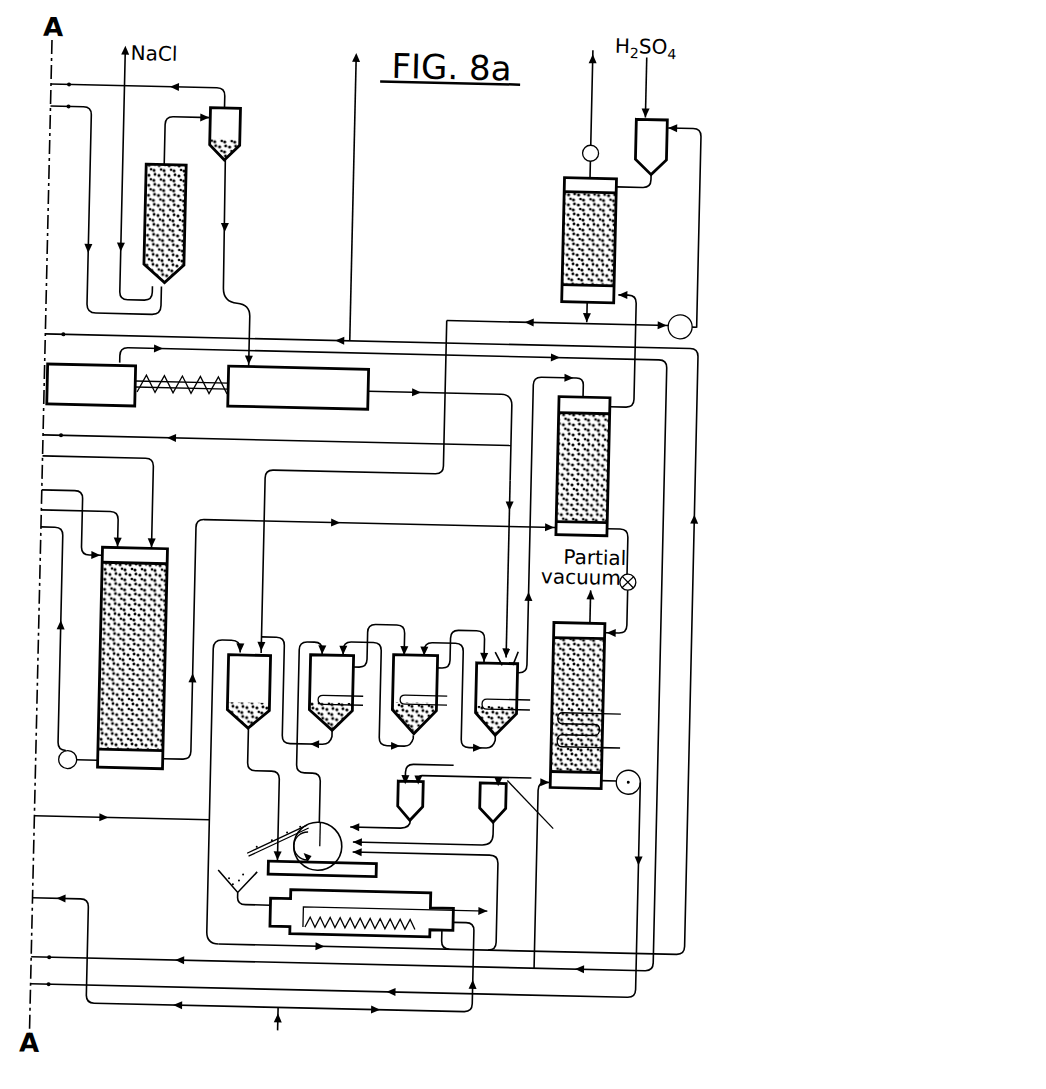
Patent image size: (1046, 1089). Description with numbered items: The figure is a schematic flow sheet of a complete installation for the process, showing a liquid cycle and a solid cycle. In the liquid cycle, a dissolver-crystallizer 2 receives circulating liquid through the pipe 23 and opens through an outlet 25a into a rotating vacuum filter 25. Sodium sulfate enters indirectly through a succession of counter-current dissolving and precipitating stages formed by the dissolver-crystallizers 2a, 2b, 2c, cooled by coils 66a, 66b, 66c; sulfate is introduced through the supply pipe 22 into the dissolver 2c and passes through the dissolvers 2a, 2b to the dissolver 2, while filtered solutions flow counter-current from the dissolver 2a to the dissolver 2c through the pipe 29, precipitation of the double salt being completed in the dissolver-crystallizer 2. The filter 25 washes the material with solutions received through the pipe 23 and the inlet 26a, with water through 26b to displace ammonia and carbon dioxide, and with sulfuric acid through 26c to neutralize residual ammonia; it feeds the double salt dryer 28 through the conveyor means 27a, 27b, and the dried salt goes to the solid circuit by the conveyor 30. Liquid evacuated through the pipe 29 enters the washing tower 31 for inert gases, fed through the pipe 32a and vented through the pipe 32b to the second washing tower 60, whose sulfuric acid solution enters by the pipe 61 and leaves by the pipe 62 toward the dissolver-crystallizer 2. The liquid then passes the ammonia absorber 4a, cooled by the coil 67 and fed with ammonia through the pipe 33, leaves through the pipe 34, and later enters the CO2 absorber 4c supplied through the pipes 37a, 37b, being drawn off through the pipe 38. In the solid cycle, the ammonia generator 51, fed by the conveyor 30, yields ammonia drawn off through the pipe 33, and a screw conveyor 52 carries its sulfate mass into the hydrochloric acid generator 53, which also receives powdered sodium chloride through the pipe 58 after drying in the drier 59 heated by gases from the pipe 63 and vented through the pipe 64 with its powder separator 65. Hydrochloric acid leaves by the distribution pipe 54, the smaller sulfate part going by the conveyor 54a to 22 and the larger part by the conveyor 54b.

The dissolver-crystallizer 2 is at (249, 692).
The dissolver-crystallizer 2a is at (334, 686).
The dissolver-crystallizer 2b is at (413, 690).
The dissolver-crystallizer 2c is at (472, 698).
The ammonia absorber 4a is at (615, 688).
The CO2 absorber 4c is at (112, 631).
The supply pipe 22 is at (514, 645).
The pipe 23 is at (138, 777).
The filter 25 is at (323, 819).
The outlet 25a is at (272, 795).
The inlet 26a is at (474, 846).
The water inlet 26b is at (412, 837).
The sulfuric acid inlet 26c is at (415, 819).
The conveyor means 27a is at (286, 833).
The conveyor means 27b is at (245, 868).
The double salt dryer 28 is at (350, 897).
The pipe 29 is at (540, 594).
The conveyor 30 is at (383, 633).
The washing tower 31 is at (620, 455).
The pipe 32a is at (359, 632).
The pipe 32b is at (618, 348).
The pipe 33 is at (349, 658).
The pipe 34 is at (337, 897).
The pipe 37a is at (109, 509).
The pipe 37b is at (123, 503).
The pipe 38 is at (68, 648).
The ammonia generator 51 is at (91, 385).
The screw conveyor 52 is at (203, 390).
The hydrochloric acid generator 53 is at (298, 387).
The distribution pipe 54 is at (356, 182).
The conveyor 54a is at (490, 568).
The conveyor 54b is at (277, 429).
The pipe 58 is at (238, 263).
The drier 59 is at (189, 198).
The second washing tower 60 is at (566, 223).
The pipe 61 is at (659, 192).
The pipe 62 is at (477, 475).
The pipe 63 is at (106, 209).
The pipe 64 is at (137, 112).
The powder separator 65 is at (232, 129).
The cooling coil 66a is at (375, 701).
The cooling coil 66b is at (456, 704).
The cooling coil 66c is at (540, 703).
The cooling coil 67 is at (596, 731).